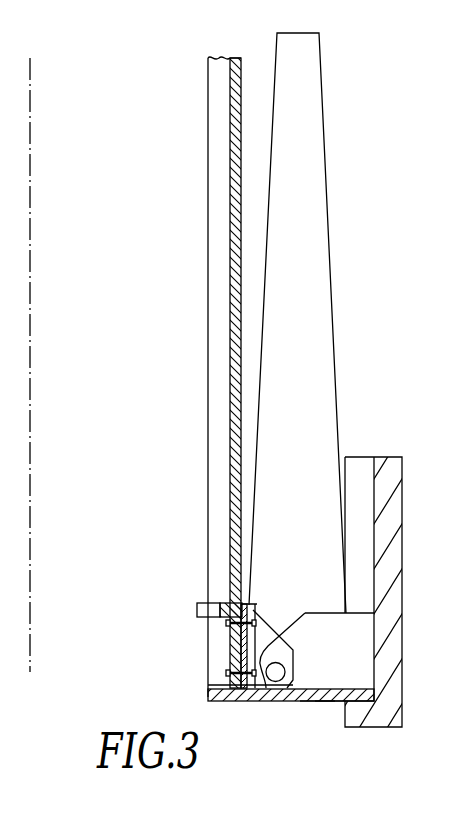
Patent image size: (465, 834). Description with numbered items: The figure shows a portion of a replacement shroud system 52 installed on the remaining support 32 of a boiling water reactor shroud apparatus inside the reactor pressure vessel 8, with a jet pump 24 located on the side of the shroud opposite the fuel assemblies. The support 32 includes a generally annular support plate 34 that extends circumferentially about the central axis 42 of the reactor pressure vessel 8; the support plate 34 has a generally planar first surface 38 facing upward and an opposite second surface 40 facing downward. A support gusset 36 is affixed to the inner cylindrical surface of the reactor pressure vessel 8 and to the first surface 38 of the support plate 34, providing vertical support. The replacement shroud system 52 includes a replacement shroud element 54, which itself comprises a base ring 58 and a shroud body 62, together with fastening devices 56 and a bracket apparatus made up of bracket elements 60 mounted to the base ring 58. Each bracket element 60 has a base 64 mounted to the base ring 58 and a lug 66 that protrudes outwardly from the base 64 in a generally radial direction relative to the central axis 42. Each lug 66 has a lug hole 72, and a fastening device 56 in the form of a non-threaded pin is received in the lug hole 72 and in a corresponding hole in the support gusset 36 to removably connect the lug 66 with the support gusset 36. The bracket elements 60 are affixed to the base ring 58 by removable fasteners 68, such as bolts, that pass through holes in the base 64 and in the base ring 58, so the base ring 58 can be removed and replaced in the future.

The reactor pressure vessel 8 is at (402, 472).
The jet pump 24 is at (323, 105).
The support 32 is at (338, 714).
The support plate 34 is at (322, 701).
The support gusset 36 is at (390, 571).
The first surface 38 is at (367, 684).
The second surface 40 is at (312, 701).
The central axis 42 is at (33, 273).
The replacement shroud system 52 is at (174, 612).
The replacement shroud element 54 is at (251, 48).
The fastening device 56 is at (283, 701).
The base ring 58 is at (208, 649).
The bracket element 60 is at (281, 600).
The shroud body 62 is at (243, 129).
The base 64 is at (254, 689).
The lug 66 is at (290, 644).
The removable fastener 68 is at (254, 623).
The lug hole 72 is at (280, 662).